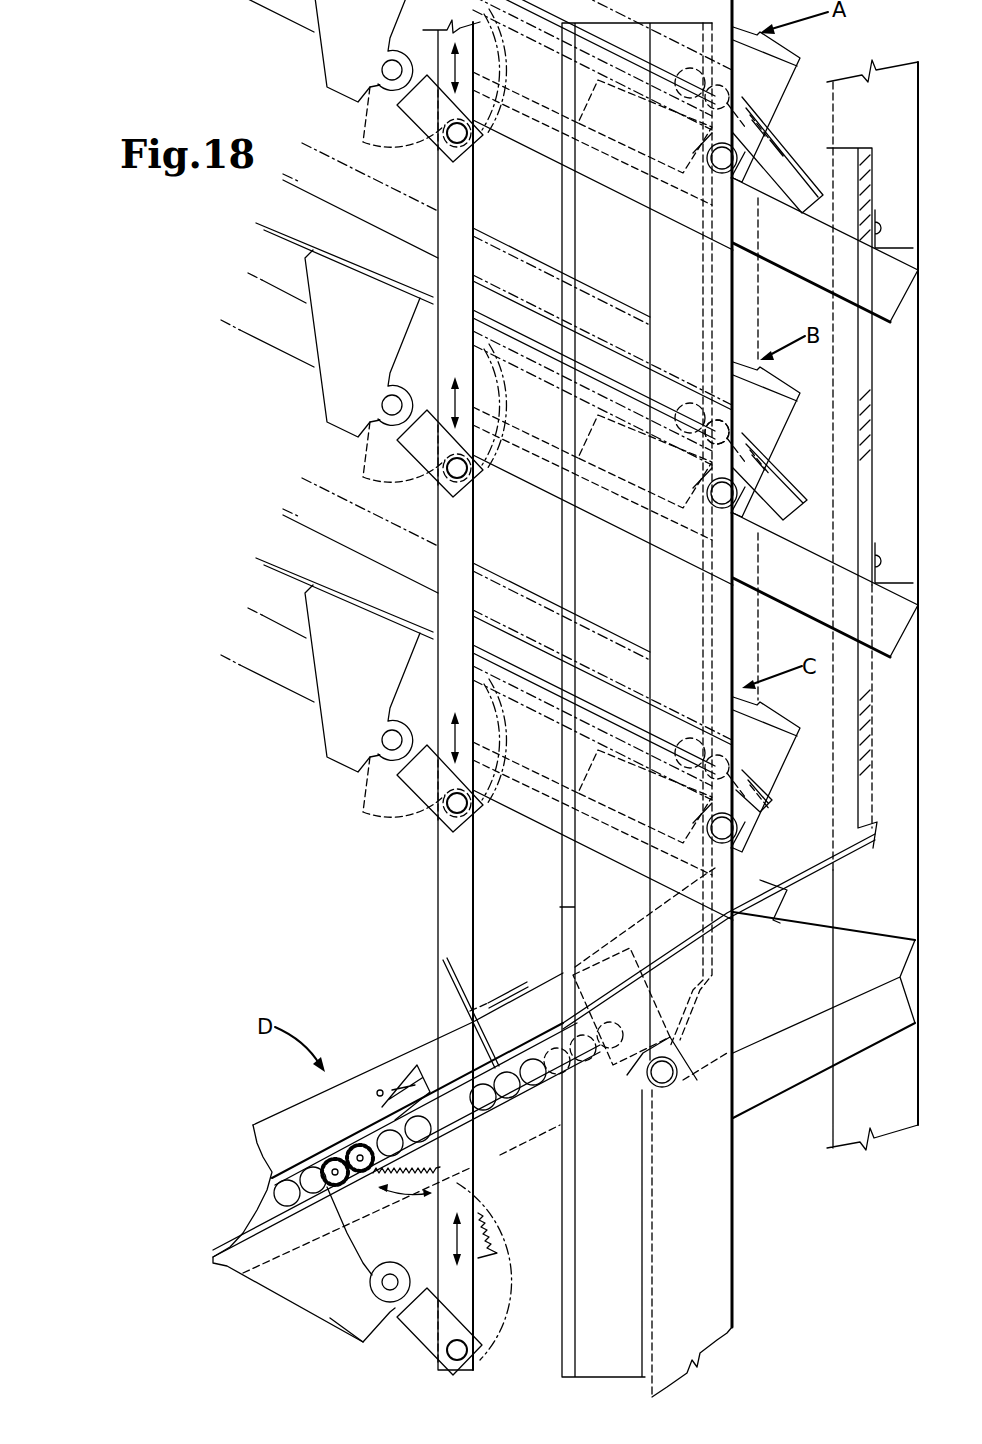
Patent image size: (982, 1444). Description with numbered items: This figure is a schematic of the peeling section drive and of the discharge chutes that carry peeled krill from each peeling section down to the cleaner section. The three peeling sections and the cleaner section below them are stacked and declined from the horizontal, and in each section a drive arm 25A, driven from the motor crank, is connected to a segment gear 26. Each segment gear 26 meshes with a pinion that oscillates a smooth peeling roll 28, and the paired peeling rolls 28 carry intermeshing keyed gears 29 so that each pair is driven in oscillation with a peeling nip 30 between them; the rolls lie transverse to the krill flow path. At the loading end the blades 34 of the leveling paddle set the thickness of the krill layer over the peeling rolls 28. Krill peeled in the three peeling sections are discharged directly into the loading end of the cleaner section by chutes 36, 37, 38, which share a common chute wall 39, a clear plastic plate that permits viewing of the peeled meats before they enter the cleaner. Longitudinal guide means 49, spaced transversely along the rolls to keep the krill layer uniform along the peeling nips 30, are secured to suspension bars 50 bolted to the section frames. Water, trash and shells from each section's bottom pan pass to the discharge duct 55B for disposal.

The drive arm 25A is at (465, 206).
The segment gear 26 is at (503, 97).
The peeling roll 28 is at (725, 80).
The keyed gear 29 is at (340, 1162).
The peeling nip 30 is at (707, 417).
The blades 34 is at (503, 993).
The chute 36 is at (790, 150).
The chute 37 is at (790, 480).
The chute 38 is at (765, 786).
The common chute wall 39 is at (863, 470).
The longitudinal guide means 49 is at (292, 1122).
The suspension bars 50 is at (397, 1107).
The discharge duct 55B is at (575, 912).